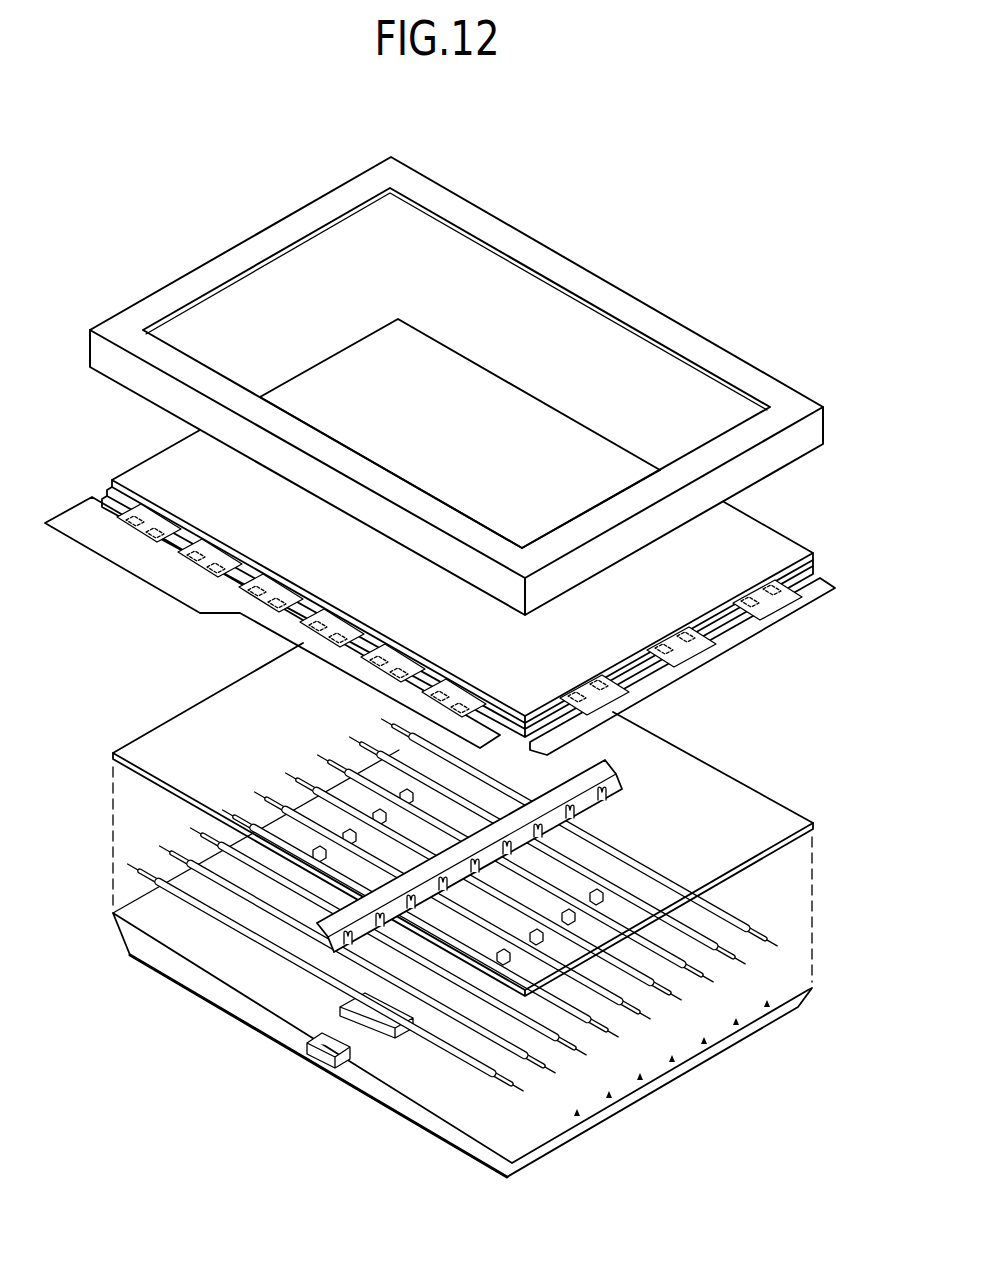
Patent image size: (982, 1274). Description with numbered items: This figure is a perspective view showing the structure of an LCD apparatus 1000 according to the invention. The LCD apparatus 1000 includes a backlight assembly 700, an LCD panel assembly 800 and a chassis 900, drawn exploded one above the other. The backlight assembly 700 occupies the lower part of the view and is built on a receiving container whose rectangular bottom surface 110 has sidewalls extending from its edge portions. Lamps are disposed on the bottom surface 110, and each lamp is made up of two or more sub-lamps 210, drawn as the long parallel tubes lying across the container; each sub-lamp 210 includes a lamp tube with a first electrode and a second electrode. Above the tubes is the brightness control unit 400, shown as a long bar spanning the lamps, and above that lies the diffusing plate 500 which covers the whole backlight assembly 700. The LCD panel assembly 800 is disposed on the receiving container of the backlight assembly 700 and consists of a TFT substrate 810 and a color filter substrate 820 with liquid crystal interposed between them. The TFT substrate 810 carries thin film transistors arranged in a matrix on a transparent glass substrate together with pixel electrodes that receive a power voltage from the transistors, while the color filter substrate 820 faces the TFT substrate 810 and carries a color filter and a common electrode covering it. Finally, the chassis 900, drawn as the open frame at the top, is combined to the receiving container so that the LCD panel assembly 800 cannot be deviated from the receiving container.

The LCD apparatus 1000 is at (207, 236).
The chassis 900 is at (605, 288).
The LCD panel assembly 800 is at (92, 402).
The color filter substrate 820 is at (168, 452).
The TFT substrate 810 is at (108, 488).
The backlight assembly 700 is at (90, 697).
The diffusing plate 500 is at (158, 732).
The brightness control unit 400 is at (325, 960).
The sub-lamps 210 is at (470, 1066).
The bottom surface 110 is at (590, 1125).